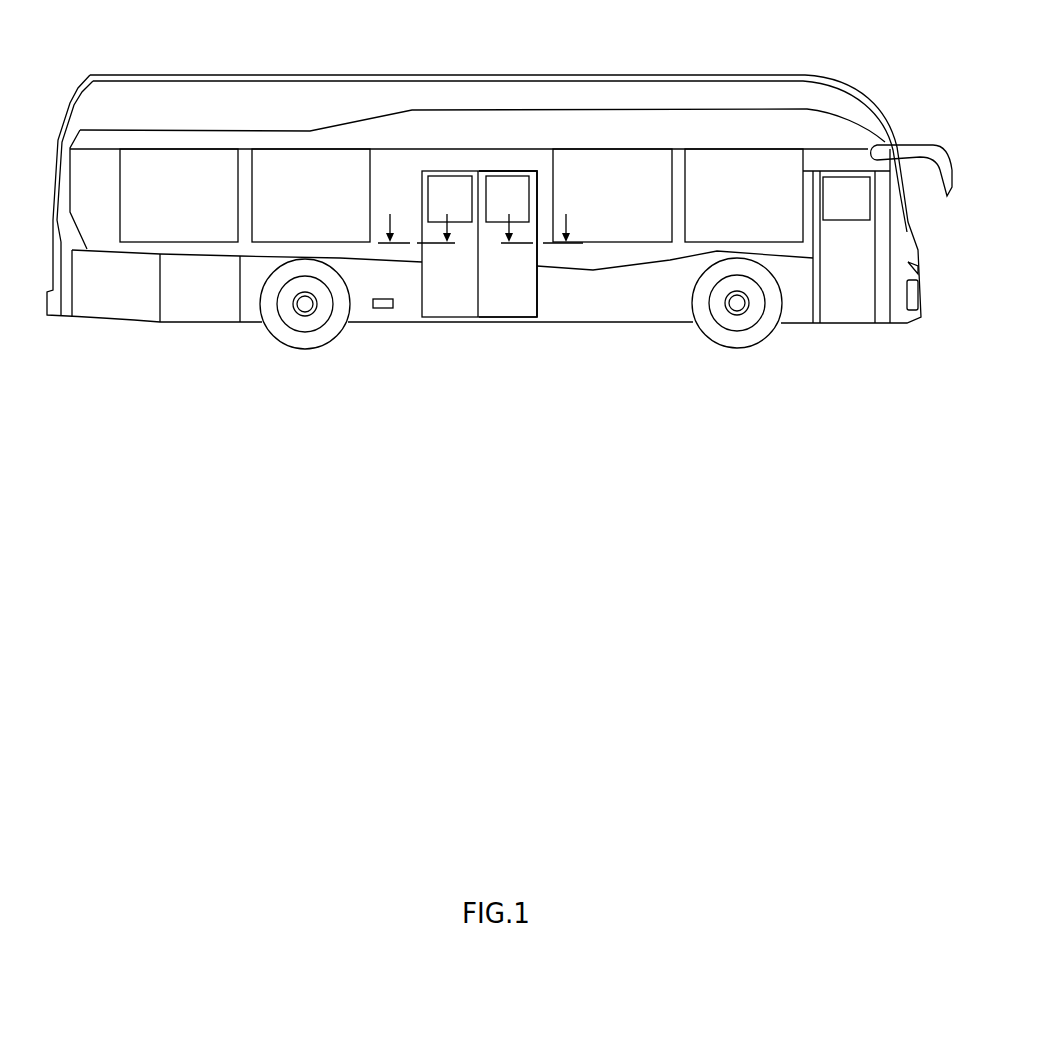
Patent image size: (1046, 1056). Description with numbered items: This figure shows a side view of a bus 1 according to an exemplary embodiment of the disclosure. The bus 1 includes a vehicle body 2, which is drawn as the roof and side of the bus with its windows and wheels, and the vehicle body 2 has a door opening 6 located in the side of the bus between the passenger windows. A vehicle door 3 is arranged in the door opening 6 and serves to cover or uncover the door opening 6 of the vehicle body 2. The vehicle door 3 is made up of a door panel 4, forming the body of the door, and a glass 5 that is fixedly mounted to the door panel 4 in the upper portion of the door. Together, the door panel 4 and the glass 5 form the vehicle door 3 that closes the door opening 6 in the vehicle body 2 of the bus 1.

The bus 1 is at (243, 37).
The vehicle body 2 is at (668, 90).
The vehicle door 3 is at (480, 325).
The door panel 4 is at (513, 313).
The glass 5 is at (502, 185).
The door opening 6 is at (518, 173).